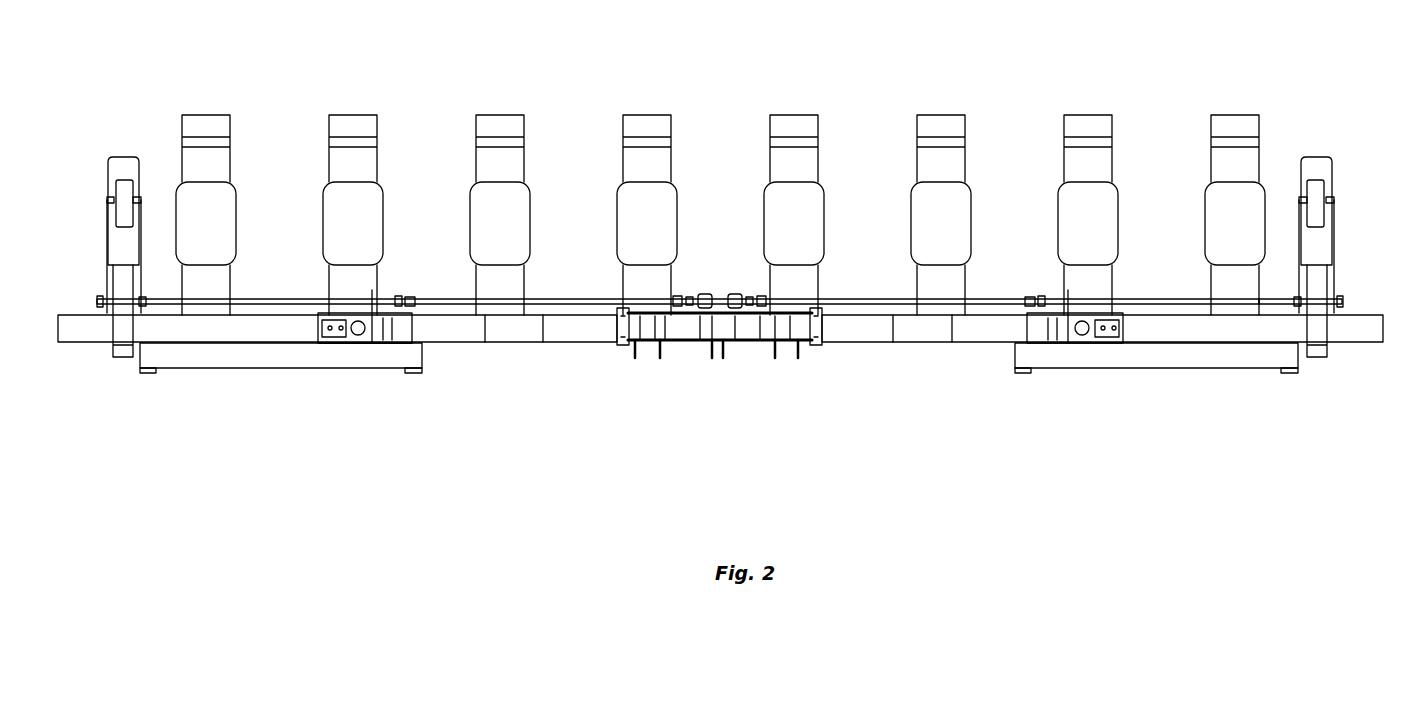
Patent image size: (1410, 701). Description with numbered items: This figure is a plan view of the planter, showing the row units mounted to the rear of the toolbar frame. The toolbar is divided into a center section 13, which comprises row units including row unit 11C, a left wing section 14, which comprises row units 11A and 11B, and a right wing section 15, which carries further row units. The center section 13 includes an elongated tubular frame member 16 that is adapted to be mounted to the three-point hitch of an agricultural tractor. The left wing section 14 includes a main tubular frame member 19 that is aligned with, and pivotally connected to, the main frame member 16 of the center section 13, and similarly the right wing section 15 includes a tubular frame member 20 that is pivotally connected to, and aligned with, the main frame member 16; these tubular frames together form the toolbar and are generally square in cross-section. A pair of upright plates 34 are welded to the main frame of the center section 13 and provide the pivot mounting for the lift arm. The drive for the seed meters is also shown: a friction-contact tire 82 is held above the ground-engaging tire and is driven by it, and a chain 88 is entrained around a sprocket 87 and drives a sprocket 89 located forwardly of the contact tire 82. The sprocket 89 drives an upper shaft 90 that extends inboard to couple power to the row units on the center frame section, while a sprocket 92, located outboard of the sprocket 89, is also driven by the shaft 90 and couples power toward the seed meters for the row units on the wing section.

The row unit 11A is at (1235, 115).
The row unit 11B is at (1075, 115).
The row unit 11C is at (930, 115).
The center section 13 is at (752, 270).
The left wing section 14 is at (1200, 380).
The right wing section 15 is at (263, 382).
The elongated tubular frame member 16 is at (687, 344).
The main tubular frame member 19 is at (1138, 330).
The tubular frame member 20 is at (245, 326).
The upright plates 34 is at (760, 343).
The friction-contact tire 82 is at (1325, 180).
The sprocket 87 is at (1333, 200).
The chain 88 is at (1336, 228).
The sprocket 89 is at (1328, 318).
The upper shaft 90 is at (1267, 300).
The sprocket 92 is at (1342, 300).